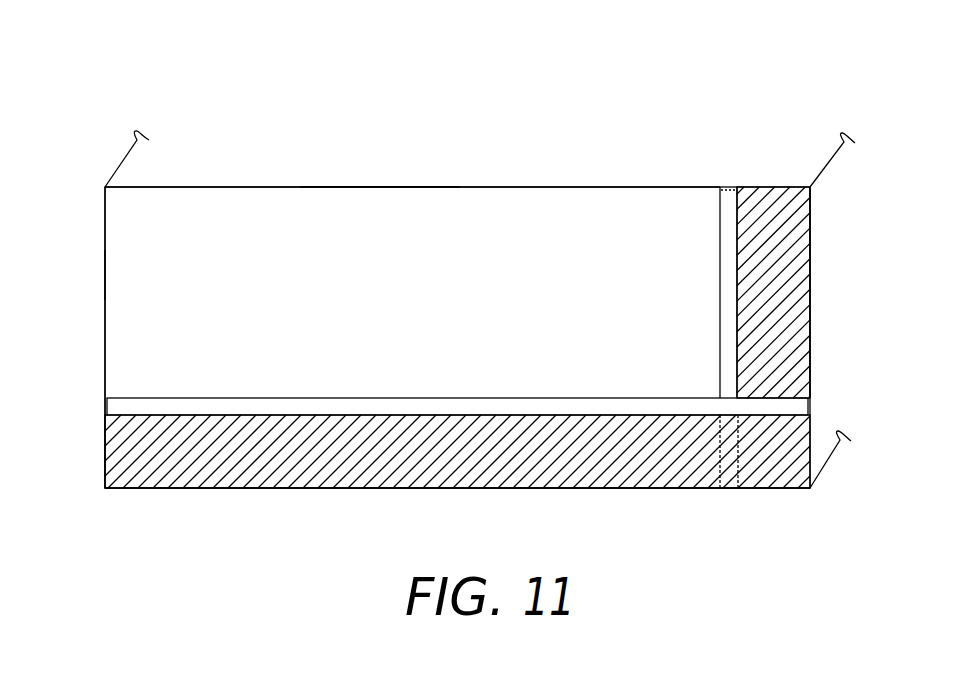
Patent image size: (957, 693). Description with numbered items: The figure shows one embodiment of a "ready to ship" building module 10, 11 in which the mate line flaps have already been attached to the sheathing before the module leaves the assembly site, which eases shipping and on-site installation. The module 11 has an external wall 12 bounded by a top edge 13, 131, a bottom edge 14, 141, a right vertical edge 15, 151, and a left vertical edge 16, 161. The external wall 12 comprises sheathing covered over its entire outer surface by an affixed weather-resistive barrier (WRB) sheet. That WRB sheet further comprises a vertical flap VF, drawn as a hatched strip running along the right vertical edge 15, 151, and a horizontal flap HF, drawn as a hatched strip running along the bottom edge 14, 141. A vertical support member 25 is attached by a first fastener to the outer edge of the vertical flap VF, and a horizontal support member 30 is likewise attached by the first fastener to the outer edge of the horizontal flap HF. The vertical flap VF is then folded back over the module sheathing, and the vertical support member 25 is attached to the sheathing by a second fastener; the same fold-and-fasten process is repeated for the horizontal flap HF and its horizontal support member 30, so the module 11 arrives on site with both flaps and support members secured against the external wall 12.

The optical device / substrate assembly 10 is at (580, 82).
The module 11 is at (105, 222).
The external wall 12 is at (253, 197).
The top surface portion 13 is at (405, 187).
The top edge 131 is at (510, 161).
The bottom layer (hatched) 14 is at (432, 490).
The bottom edge 141 is at (457, 485).
The side hatched region 15 is at (812, 290).
The right vertical edge 151 is at (805, 292).
The left side surface 16 is at (105, 264).
The left vertical edge 161 is at (79, 369).
The vertical support member 25 is at (728, 298).
The horizontal support member 30 is at (442, 410).
The vertical flap VF is at (790, 227).
The horizontal flap HF is at (650, 470).